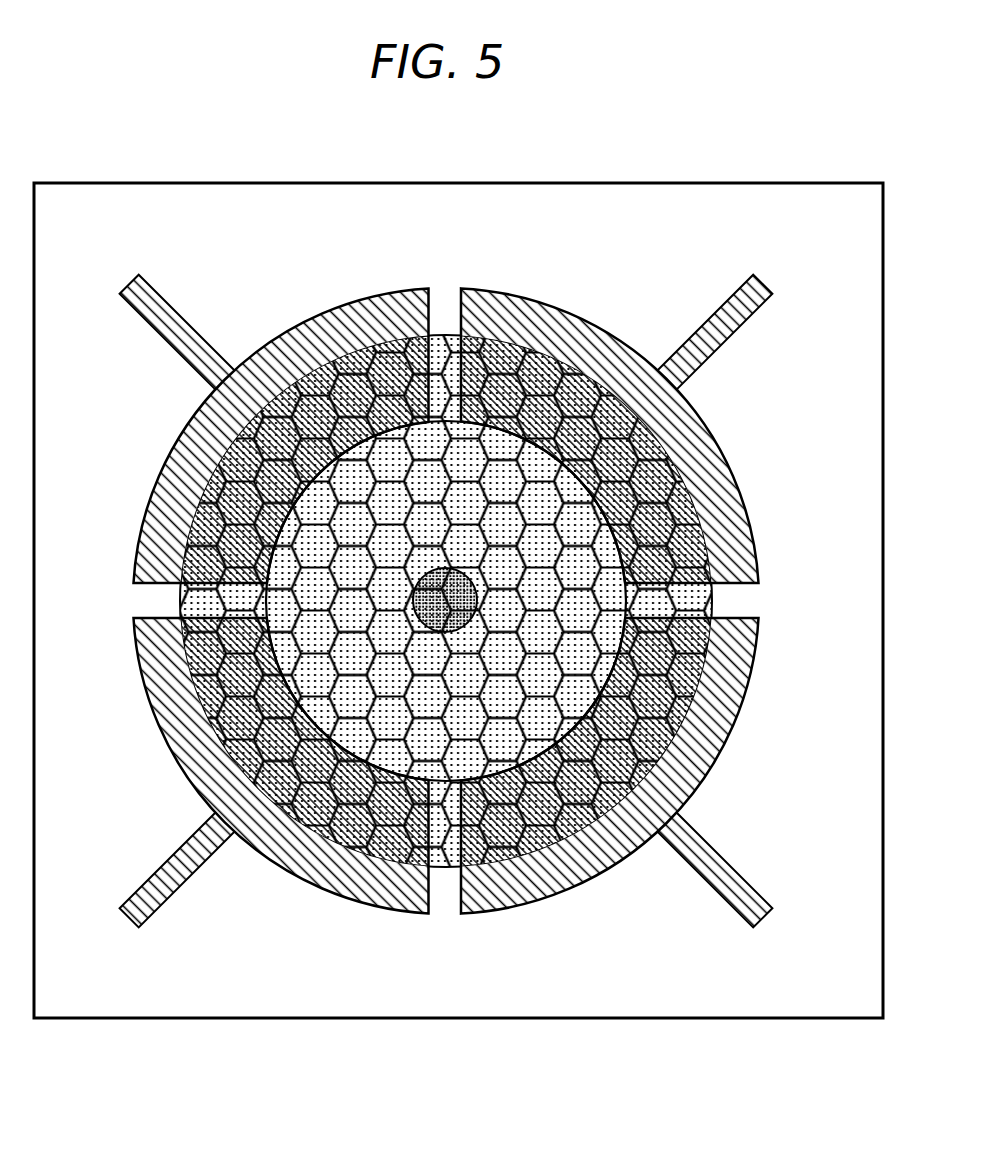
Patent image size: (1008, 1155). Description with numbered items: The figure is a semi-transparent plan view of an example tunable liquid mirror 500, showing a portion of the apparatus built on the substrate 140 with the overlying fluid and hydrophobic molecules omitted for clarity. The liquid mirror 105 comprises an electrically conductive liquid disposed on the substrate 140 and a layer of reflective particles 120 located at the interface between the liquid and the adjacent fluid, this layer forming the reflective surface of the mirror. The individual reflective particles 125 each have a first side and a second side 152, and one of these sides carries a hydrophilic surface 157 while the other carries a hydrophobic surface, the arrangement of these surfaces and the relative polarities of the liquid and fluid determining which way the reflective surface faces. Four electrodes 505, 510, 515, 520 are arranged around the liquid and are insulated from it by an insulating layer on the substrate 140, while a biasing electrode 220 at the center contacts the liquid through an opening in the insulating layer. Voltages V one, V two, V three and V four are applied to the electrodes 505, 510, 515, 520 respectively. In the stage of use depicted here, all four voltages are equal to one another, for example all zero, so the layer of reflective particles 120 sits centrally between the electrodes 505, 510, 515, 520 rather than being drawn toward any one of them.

The tunable liquid mirror 500 is at (730, 138).
The substrate 140 is at (857, 1000).
The liquid mirror 105 is at (786, 351).
The layer of reflective particles 120 is at (454, 600).
The reflective particles 125 is at (540, 377).
The second side 152 is at (630, 435).
The hydrophilic surface 157 is at (668, 466).
The biasing electrode 220 is at (462, 608).
The electrode 505 is at (760, 571).
The electrode 510 is at (140, 534).
The electrode 515 is at (160, 730).
The electrode 520 is at (707, 783).